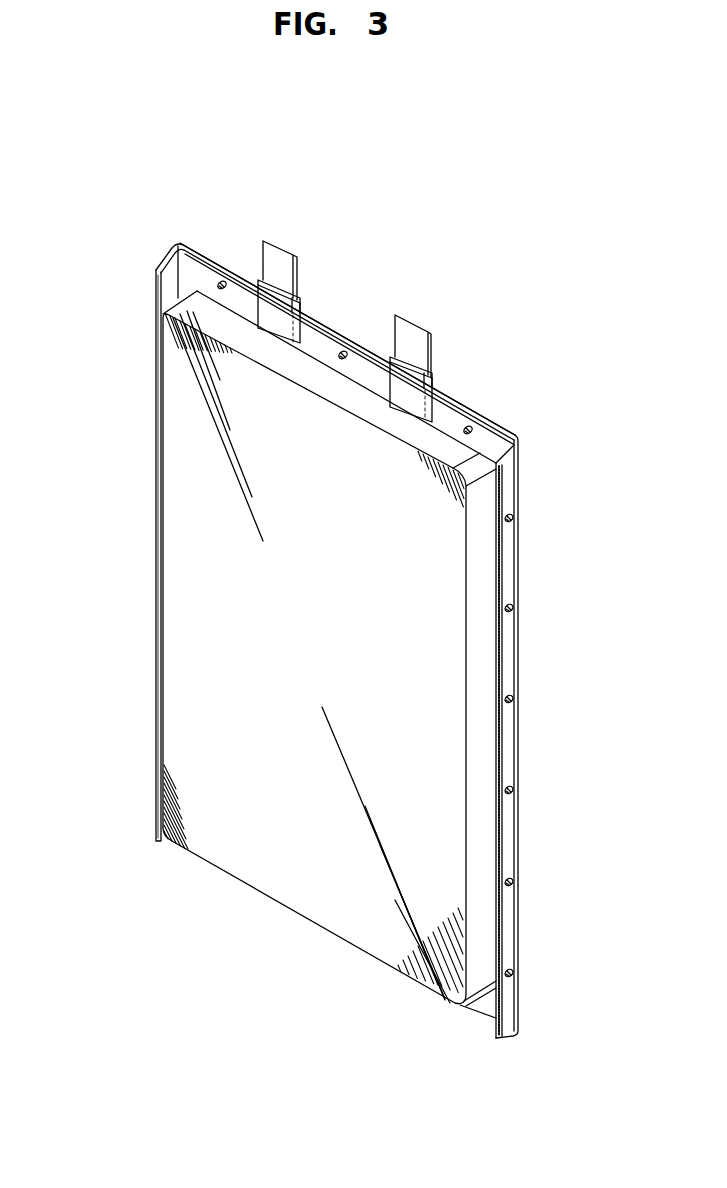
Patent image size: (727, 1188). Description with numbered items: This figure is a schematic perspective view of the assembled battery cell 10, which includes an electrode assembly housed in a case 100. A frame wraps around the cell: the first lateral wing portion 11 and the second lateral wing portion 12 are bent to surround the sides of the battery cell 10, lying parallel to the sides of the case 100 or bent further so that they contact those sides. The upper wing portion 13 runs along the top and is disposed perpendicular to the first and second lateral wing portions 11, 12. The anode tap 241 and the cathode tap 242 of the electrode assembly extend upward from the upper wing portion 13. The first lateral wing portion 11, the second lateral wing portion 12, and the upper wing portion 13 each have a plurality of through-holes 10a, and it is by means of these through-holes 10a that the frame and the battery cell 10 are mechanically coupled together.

The battery cell 10 is at (48, 189).
The through-holes 10a is at (471, 434).
The first lateral wing portion 11 is at (157, 284).
The second lateral wing portion 12 is at (508, 573).
The upper wing portion 13 is at (338, 343).
The case 100 is at (157, 664).
The anode tap 241 is at (278, 261).
The cathode tap 242 is at (412, 336).